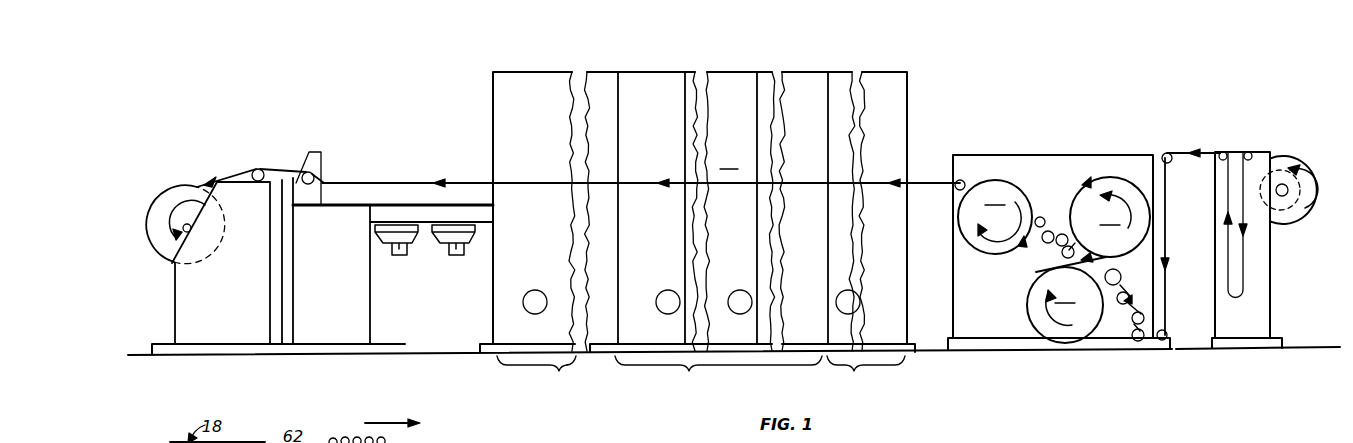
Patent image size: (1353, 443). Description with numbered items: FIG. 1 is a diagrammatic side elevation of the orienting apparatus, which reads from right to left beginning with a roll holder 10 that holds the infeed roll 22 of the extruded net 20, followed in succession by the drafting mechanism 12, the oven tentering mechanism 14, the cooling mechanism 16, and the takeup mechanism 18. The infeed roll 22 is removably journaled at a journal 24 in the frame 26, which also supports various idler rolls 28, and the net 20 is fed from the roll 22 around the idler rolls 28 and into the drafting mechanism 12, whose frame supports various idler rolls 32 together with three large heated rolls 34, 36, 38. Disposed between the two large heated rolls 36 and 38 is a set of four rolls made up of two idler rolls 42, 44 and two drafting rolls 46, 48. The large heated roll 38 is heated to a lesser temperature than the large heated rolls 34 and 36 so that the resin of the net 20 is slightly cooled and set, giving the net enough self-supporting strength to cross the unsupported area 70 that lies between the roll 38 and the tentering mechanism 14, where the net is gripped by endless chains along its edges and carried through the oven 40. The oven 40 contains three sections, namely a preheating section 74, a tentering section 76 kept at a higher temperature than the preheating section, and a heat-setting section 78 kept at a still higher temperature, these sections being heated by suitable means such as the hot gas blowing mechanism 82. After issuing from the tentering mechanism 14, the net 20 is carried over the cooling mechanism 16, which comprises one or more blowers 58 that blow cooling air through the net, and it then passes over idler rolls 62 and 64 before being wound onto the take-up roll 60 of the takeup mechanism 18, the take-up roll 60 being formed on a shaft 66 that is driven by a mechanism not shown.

The roll holder 10 is at (1279, 210).
The drafting mechanism 12 is at (1075, 224).
The oven tentering mechanism 14 is at (700, 200).
The cooling mechanism 16 is at (393, 238).
The takeup mechanism 18 is at (200, 232).
The extruded net 20 is at (1198, 140).
The infeed roll 22 is at (1312, 197).
The journal 24 is at (1276, 192).
The frame 26 is at (1268, 297).
The idler rolls 28 is at (1243, 155).
The idler rolls 32 is at (964, 182).
The large heated roll 34 is at (1065, 305).
The large heated roll 36 is at (1110, 217).
The large heated roll 38 is at (995, 217).
The oven 40 is at (729, 159).
The idler roll 42 is at (1039, 216).
The idler roll 44 is at (1064, 257).
The drafting roll 46 is at (1048, 231).
The drafting roll 48 is at (1056, 243).
The blowers 58 is at (398, 258).
The take-up roll 60 is at (148, 223).
The idler roll 62 is at (315, 176).
The idler roll 64 is at (260, 167).
The shaft 66 is at (194, 232).
The unsupported area 70 is at (938, 150).
The preheating section 74 is at (866, 372).
The tentering section 76 is at (718, 372).
The heat-setting section 78 is at (536, 372).
The hot gas blowing mechanism 82 is at (535, 302).